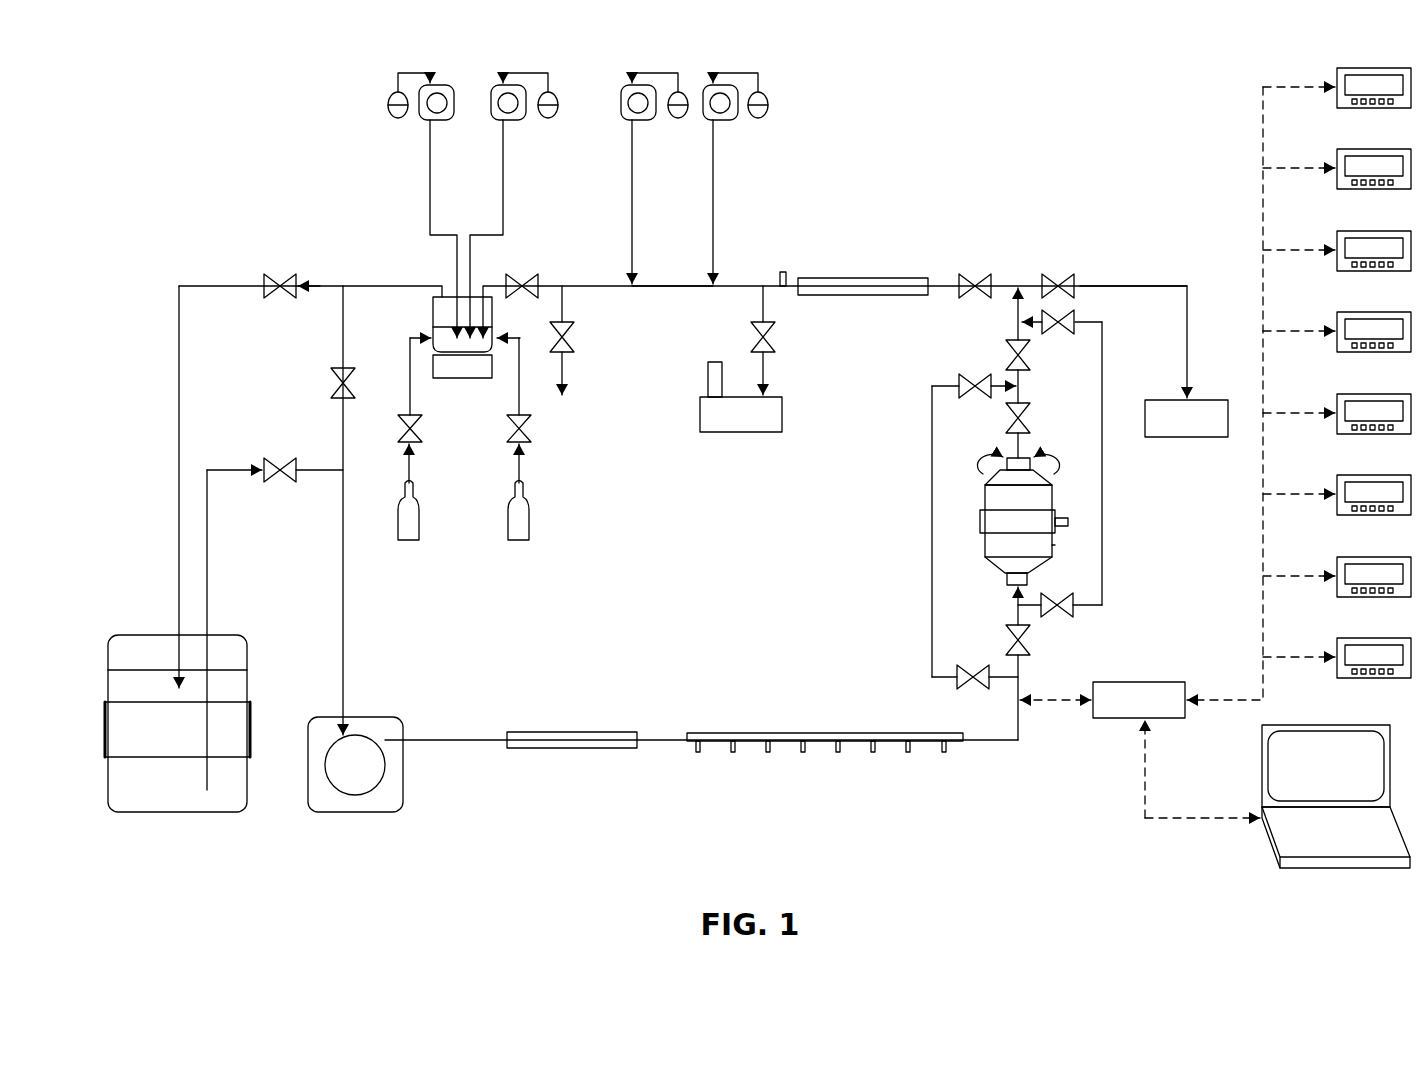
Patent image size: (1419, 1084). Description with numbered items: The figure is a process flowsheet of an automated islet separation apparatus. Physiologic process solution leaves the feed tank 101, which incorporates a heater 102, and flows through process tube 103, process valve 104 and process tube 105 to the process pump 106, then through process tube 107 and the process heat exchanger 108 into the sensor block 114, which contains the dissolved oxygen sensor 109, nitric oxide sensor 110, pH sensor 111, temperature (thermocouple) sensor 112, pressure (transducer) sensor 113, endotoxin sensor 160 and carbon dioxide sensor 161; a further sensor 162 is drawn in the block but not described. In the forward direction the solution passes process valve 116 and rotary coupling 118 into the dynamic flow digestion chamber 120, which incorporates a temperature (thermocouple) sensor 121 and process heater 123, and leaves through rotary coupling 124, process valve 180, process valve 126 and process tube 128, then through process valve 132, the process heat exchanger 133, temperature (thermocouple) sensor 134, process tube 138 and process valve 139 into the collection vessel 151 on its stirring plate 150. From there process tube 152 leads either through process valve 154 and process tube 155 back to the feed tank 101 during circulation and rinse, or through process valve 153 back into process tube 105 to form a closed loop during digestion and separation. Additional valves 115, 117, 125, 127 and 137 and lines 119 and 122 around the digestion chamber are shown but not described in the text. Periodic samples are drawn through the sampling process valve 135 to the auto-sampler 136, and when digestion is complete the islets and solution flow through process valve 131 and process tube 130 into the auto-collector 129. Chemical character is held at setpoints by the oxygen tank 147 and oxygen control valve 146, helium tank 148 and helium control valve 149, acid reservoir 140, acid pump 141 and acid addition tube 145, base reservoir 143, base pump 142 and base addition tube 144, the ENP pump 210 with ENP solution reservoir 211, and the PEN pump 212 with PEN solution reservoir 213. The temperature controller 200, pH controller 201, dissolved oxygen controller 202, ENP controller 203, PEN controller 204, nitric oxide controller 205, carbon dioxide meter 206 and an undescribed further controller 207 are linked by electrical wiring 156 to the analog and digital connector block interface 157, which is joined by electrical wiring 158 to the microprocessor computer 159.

The feed tank 101 is at (125, 812).
The heater 102 is at (250, 708).
The process tube 103 is at (207, 560).
The process valve 104 is at (265, 462).
The process tube 105 is at (343, 598).
The process pump 106 is at (335, 812).
The process tube 107 is at (458, 740).
The process heat exchanger 108 is at (575, 748).
The dissolved oxygen sensor 109 is at (698, 752).
The nitric oxide sensor 110 is at (733, 752).
The pH sensor 111 is at (768, 752).
The temperature (thermocouple) sensor 112 is at (803, 752).
The pressure (transducer) sensor 113 is at (838, 752).
The sensor block 114 is at (820, 733).
The valve 115 is at (957, 684).
The process valve 116 is at (1030, 650).
The valve 117 is at (1075, 612).
The rotary coupling 118 is at (1007, 580).
The bypass line 119 is at (932, 524).
The dynamic flow digestion chamber 120 is at (1055, 545).
The temperature (thermocouple) sensor 121 is at (1068, 525).
The line 122 is at (1105, 470).
The process heater 123 is at (985, 520).
The rotary coupling 124 is at (1045, 465).
The valve 125 is at (950, 380).
The process valve 126 is at (1008, 340).
The valve 127 is at (1075, 318).
The process tube 128 is at (1012, 312).
The auto-collector 129 is at (1185, 437).
The process tube 130 is at (1130, 286).
The process valve 131 is at (1065, 272).
The process valve 132 is at (980, 272).
The process heat exchanger 133 is at (868, 278).
The temperature (thermocouple) sensor 134 is at (785, 270).
The sampling process valve 135 is at (776, 350).
The auto-sampler 136 is at (735, 432).
The valve 137 is at (574, 350).
The process tube 138 is at (672, 288).
The process valve 139 is at (540, 284).
The acid reservoir 140 is at (550, 120).
The acid pump 141 is at (509, 122).
The base pump 142 is at (437, 122).
The base reservoir 143 is at (398, 120).
The base addition tube 144 is at (428, 198).
The acid addition tube 145 is at (505, 198).
The oxygen control valve 146 is at (531, 440).
The oxygen tank 147 is at (522, 540).
The helium tank 148 is at (412, 540).
The helium control valve 149 is at (422, 440).
The stirring plate 150 is at (448, 378).
The collection vessel 151 is at (433, 310).
The process tube 152 is at (398, 285).
The process valve 153 is at (335, 374).
The process valve 154 is at (265, 280).
The process tube 155 is at (179, 458).
The electrical (electronic) wiring 156 is at (1263, 626).
The analog and digital and connector block interface 157 is at (1093, 718).
The electrical (electronic) wiring 158 is at (1145, 772).
The microprocessor computer 159 is at (1345, 868).
The endotoxin sensor 160 is at (873, 752).
The carbon dioxide sensor 161 is at (908, 752).
The sensor 162 is at (944, 752).
The process valve 180 is at (1030, 410).
The temperature controller 200 is at (1400, 678).
The pH controller 201 is at (1400, 597).
The dissolved oxygen controller 202 is at (1400, 515).
The endotoxin neutralizing protein (ENP) controller 203 is at (1400, 434).
The proteolytic enzyme (collagenase) neutralization (PEN) controller 204 is at (1400, 352).
The nitric oxide controller 205 is at (1400, 271).
The carbon dioxide meter 206 is at (1400, 189).
The controller 207 is at (1400, 108).
The endotoxin neutralizing protein (ENP) pump 210 is at (638, 122).
The ENP solution reservoir 211 is at (680, 120).
The proteolytic enzyme neutralization (PEN) pump 212 is at (721, 122).
The PEN solution reservoir 213 is at (761, 120).